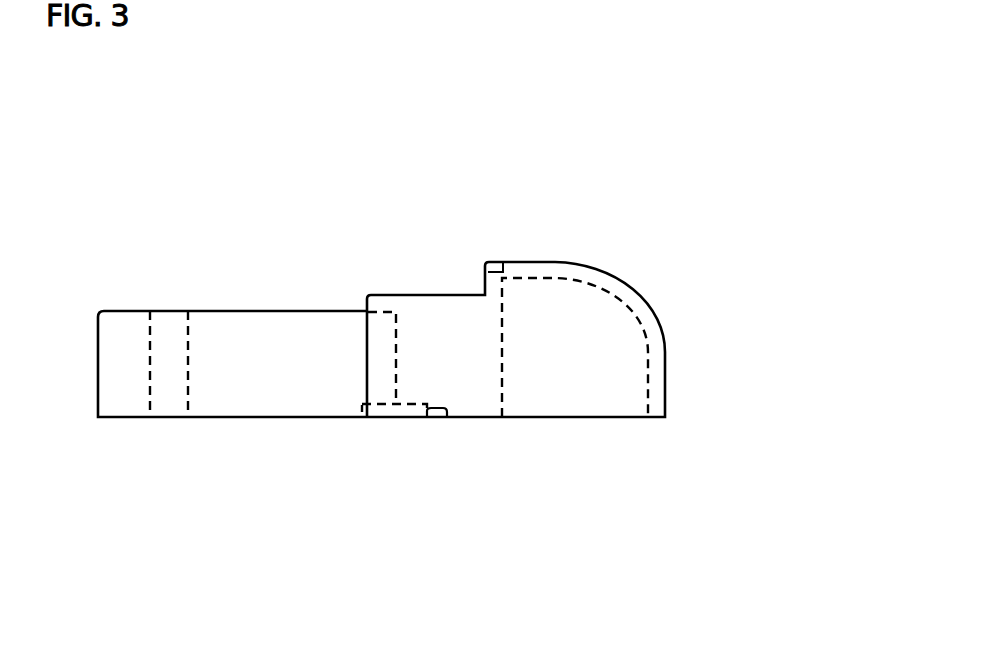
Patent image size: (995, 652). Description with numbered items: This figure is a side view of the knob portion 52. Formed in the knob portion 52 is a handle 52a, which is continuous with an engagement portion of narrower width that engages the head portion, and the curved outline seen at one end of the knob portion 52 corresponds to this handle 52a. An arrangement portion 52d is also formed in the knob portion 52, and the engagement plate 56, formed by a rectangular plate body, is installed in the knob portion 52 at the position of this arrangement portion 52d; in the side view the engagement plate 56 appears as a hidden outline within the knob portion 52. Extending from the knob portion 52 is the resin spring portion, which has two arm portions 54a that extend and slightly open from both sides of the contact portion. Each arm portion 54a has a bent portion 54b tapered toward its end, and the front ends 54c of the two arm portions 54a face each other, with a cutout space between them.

The knob portion 52 is at (609, 264).
The handle 52a is at (617, 368).
The arrangement portion 52d is at (447, 415).
The arm portion 54a is at (270, 394).
The bent portion 54b is at (117, 340).
The front end 54c is at (167, 335).
The engagement plate 56 is at (380, 410).